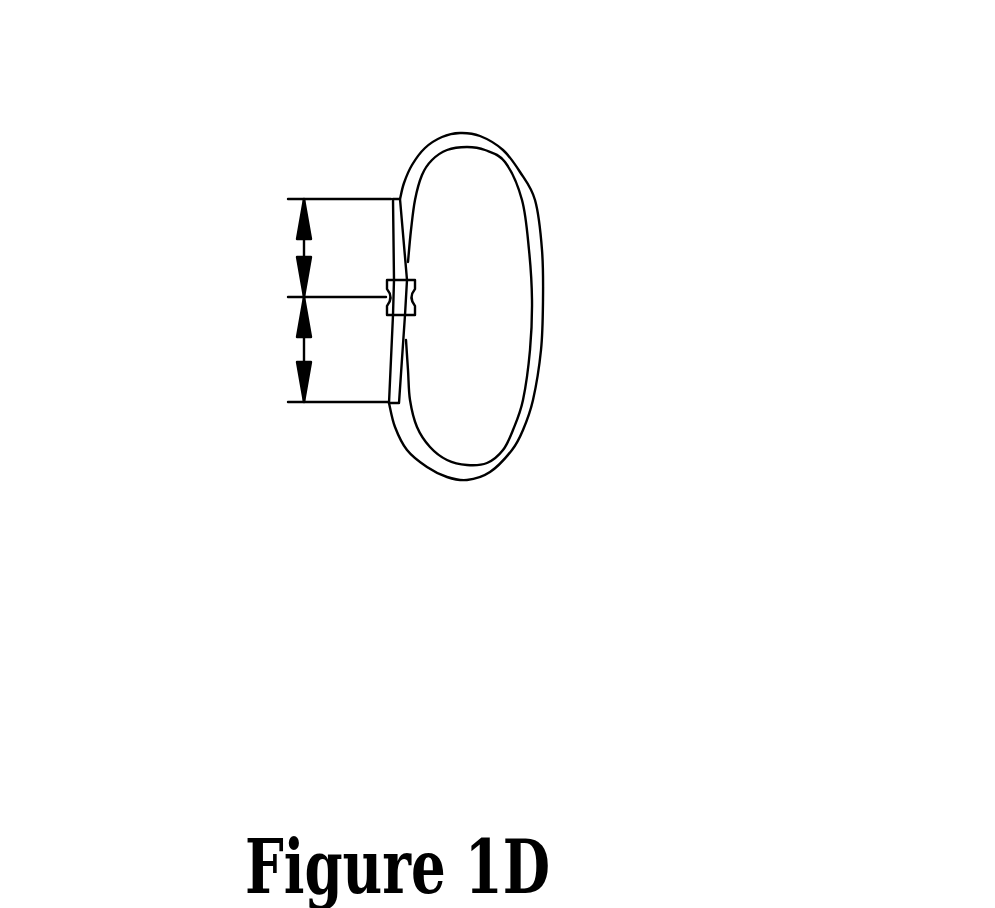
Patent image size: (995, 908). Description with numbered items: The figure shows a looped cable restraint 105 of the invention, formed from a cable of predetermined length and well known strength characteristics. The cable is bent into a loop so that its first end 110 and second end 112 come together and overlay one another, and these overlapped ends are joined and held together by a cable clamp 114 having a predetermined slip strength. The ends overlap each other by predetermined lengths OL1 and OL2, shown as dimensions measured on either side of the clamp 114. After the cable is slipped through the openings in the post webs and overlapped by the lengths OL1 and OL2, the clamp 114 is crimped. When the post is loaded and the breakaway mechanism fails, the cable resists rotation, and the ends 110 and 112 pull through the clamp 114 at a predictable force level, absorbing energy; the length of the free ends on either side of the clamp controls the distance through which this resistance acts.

The cable restraint 105 is at (725, 48).
The second end 112 is at (312, 112).
The first end 110 is at (315, 493).
The cable clamp 114 is at (630, 444).
The overlap length OL1 is at (302, 248).
The overlap length OL2 is at (302, 348).